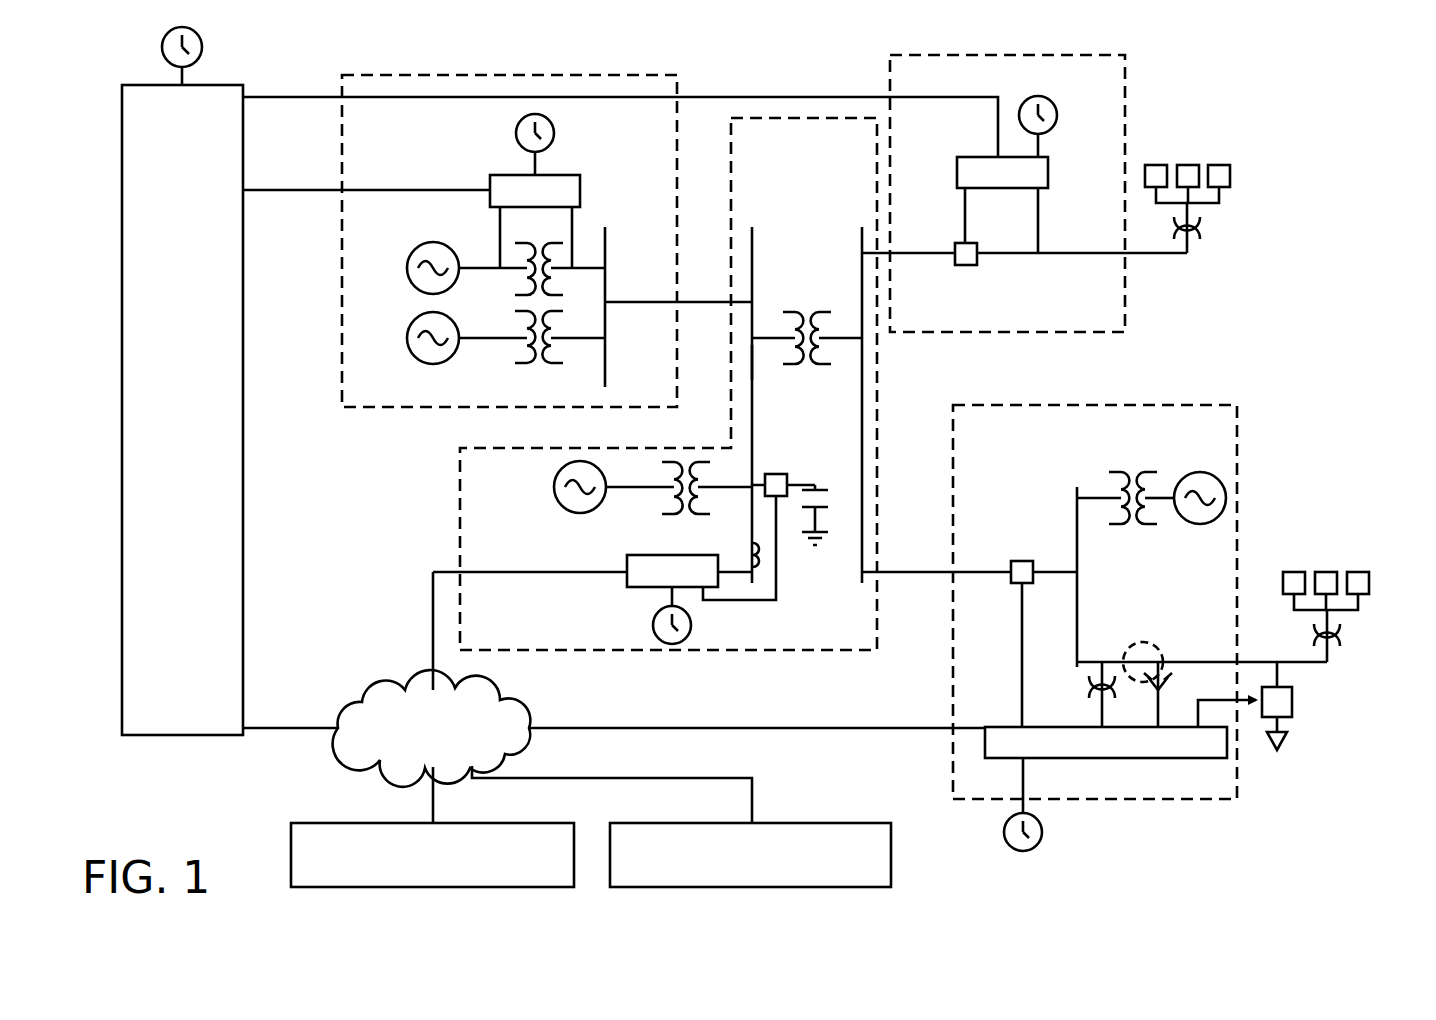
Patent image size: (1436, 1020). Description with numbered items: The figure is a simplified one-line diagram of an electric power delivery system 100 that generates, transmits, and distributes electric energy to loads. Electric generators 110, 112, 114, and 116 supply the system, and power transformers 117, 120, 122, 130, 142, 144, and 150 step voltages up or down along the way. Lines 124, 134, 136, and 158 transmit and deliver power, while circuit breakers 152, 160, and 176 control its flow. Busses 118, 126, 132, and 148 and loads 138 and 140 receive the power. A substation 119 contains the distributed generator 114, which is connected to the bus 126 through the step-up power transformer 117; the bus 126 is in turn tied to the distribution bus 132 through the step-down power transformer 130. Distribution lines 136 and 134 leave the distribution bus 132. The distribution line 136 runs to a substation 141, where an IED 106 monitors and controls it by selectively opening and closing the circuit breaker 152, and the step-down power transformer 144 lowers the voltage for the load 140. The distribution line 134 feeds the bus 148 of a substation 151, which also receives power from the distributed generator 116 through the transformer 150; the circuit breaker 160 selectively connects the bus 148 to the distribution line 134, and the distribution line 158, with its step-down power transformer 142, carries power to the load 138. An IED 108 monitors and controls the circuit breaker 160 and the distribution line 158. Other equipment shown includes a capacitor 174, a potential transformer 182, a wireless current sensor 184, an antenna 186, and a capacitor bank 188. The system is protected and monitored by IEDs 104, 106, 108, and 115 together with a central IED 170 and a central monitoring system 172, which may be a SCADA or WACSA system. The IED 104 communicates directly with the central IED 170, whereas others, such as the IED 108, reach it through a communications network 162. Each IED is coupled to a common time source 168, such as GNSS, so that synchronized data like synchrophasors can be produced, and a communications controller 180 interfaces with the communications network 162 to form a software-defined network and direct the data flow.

The electric power delivery system 100 is at (1238, 90).
The IED 104 is at (492, 175).
The IED 106 is at (965, 157).
The IED 108 is at (1100, 759).
The electric generator 110 is at (412, 245).
The electric generator 112 is at (412, 316).
The electric generator 114 is at (552, 492).
The IED 115 is at (675, 555).
The distributed generator 116 is at (1198, 526).
The power transformer 117 is at (662, 505).
The bus 118 is at (608, 375).
The substation 119 is at (532, 650).
The power transformer 120 is at (520, 285).
The power transformer 122 is at (537, 365).
The line 124 is at (688, 307).
The bus 126 is at (755, 366).
The power transformer 130 is at (806, 312).
The distribution bus 132 is at (860, 558).
The distribution line 134 is at (970, 576).
The distribution line 136 is at (946, 258).
The load 138 is at (1325, 572).
The load 140 is at (1232, 175).
The substation 141 is at (1095, 333).
The power transformer 142 is at (1341, 635).
The power transformer 144 is at (1201, 229).
The bus 148 is at (1075, 490).
The transformer 150 is at (1135, 472).
The substation 151 is at (1172, 800).
The circuit breaker 152 is at (975, 265).
The distribution line 158 is at (1308, 665).
The circuit breaker 160 is at (1020, 560).
The communications network 162 is at (390, 695).
The common time source 168 is at (203, 44).
The central IED 170 is at (244, 411).
The central monitoring system 172 is at (335, 823).
The capacitor 174 is at (818, 489).
The circuit breaker 176 is at (780, 474).
The communications controller 180 is at (650, 823).
The potential transformer 182 is at (1086, 687).
The wireless current sensor 184 is at (1134, 648).
The antenna 186 is at (1172, 688).
The capacitor bank 188 is at (1295, 702).